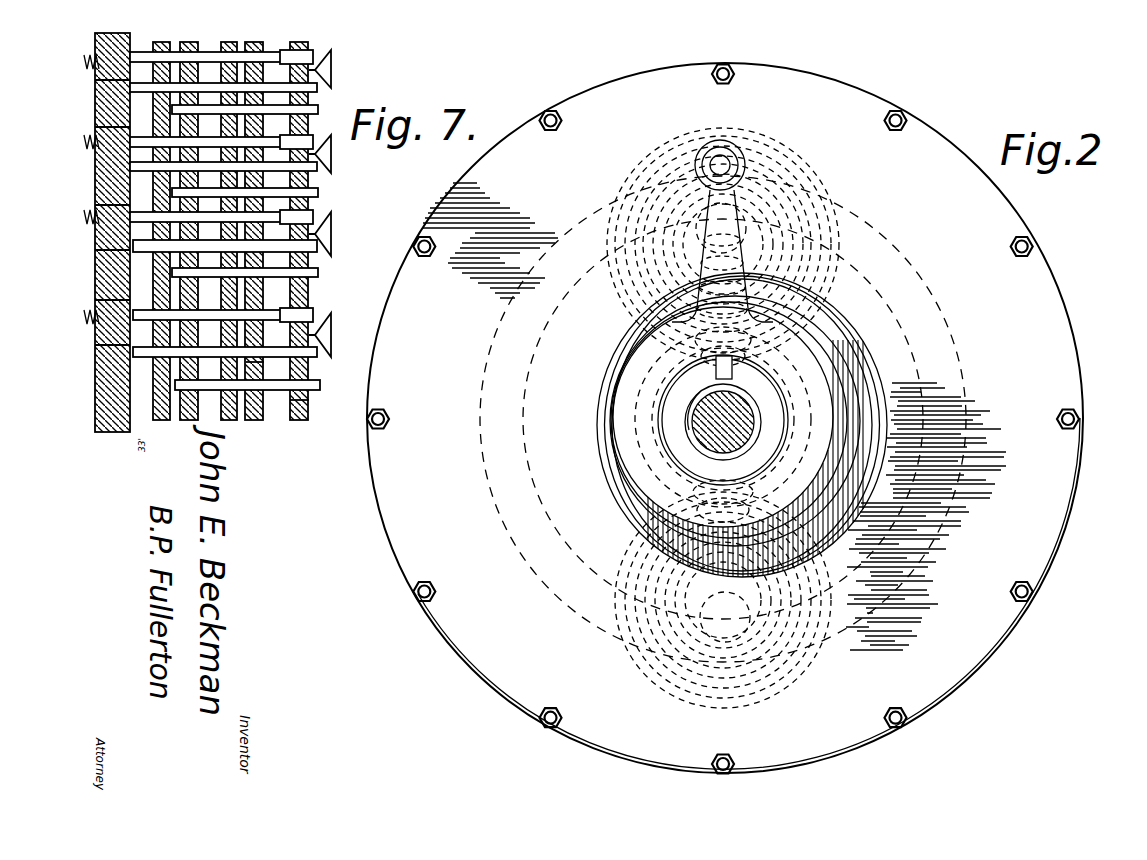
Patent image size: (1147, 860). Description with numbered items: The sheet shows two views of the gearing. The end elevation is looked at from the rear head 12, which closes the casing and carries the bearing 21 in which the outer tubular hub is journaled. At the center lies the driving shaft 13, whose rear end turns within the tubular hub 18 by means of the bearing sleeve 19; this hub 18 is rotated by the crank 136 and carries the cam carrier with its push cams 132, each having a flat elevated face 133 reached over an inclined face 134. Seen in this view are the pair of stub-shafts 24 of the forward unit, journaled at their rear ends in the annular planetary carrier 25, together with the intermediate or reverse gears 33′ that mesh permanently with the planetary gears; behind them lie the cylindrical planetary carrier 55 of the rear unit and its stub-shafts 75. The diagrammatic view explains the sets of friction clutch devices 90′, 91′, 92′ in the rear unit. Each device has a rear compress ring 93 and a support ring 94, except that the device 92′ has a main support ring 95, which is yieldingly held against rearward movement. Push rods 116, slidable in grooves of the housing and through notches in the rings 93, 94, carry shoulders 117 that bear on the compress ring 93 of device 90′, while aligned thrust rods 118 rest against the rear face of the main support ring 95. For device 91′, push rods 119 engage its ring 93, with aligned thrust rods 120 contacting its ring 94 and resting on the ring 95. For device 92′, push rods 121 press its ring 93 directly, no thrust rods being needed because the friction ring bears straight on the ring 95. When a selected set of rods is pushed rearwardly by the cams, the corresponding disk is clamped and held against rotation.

In FIG. 2, the head 12 is at (378, 520).
In FIG. 2, the driving shaft 13 is at (745, 414).
In FIG. 2, the tubular hub 18 is at (778, 380).
In FIG. 2, the bearing sleeve 19 is at (690, 407).
In FIG. 2, the bearing 21 is at (600, 352).
In FIG. 2, the stub-shaft 24 is at (742, 208).
In FIG. 2, the annular planetary carrier 25 is at (483, 370).
In FIG. 2, the intermediate or reverse gear 33′ is at (690, 334).
In FIG. 2, the cylindrical planetary carrier 55 is at (537, 488).
In FIG. 2, the stub-shaft 75 is at (745, 268).
In FIG. 2, the crank 136 is at (725, 235).
In FIG. 7, the main support ring 95 is at (104, 381).
In FIG. 7, the friction clutch device 92′ is at (156, 420).
In FIG. 7, the friction clutch device 91′ is at (222, 420).
In FIG. 7, the friction clutch device 90′ is at (284, 420).
In FIG. 7, the push rod 116 is at (318, 50).
In FIG. 7, the shoulder 117 is at (332, 226).
In FIG. 7, the support or thrust rod 118 is at (140, 55).
In FIG. 7, the push rod 119 is at (318, 88).
In FIG. 7, the thrust or support rod 120 is at (140, 112).
In FIG. 7, the push rod 121 is at (318, 110).
In FIG. 7, the push cam 132 is at (332, 165).
In FIG. 7, the flat elevated face 133 is at (332, 64).
In FIG. 7, the inclined face 134 is at (333, 58).
In FIG. 7, the rear compress ring 93 is at (309, 405).
In FIG. 7, the support ring 94 is at (262, 370).